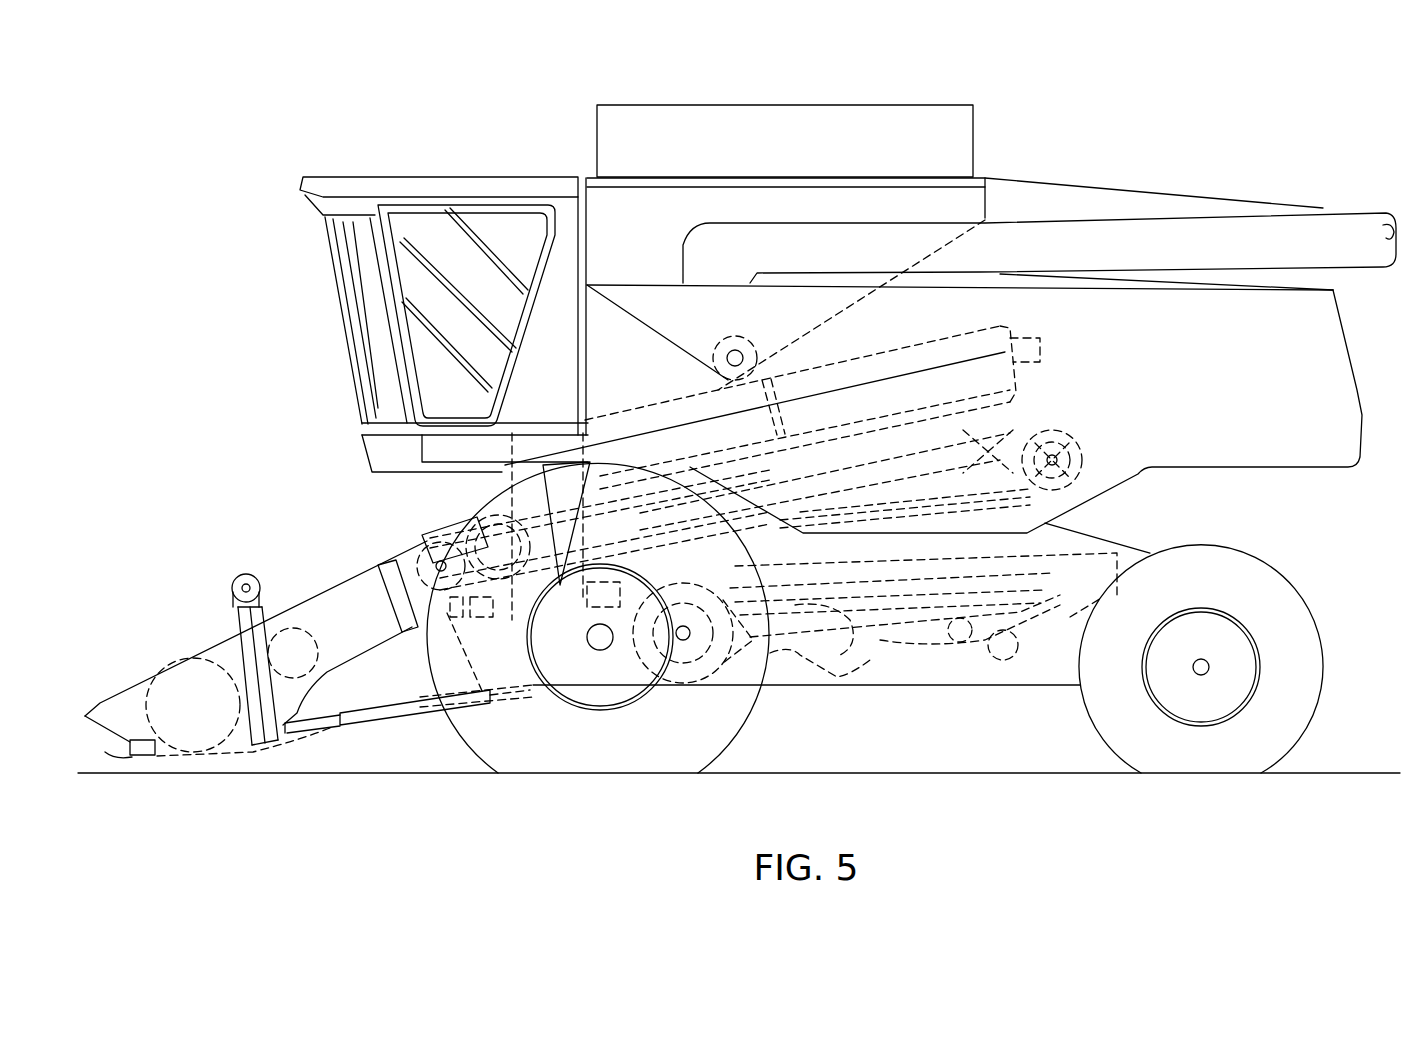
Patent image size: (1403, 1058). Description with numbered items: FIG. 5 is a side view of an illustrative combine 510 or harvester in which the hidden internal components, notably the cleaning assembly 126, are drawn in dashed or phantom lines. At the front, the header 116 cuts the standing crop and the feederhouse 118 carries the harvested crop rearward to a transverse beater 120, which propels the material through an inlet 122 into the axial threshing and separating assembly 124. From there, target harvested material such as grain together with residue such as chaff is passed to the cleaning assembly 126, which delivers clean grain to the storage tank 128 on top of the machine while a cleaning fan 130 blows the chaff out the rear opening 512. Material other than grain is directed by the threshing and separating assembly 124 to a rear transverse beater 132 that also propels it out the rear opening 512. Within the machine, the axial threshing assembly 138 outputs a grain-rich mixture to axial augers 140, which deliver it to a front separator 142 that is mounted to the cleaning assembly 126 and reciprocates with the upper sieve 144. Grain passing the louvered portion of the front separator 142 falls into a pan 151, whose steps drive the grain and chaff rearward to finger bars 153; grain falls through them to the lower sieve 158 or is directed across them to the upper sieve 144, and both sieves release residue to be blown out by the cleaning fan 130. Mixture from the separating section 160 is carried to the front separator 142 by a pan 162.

The combine 510 is at (1112, 130).
The rear opening 512 is at (1105, 457).
The header 116 is at (147, 672).
The feederhouse 118 is at (333, 582).
The transverse beater 120 is at (445, 522).
The inlet 122 is at (495, 497).
The axial threshing and separating assembly 124 is at (648, 395).
The cleaning assembly 126 is at (790, 655).
The storage tank 128 is at (753, 155).
The cleaning fan 130 is at (690, 667).
The transverse beater 132 is at (1085, 433).
The axial threshing assembly 138 is at (633, 427).
The axial augers 140 is at (672, 527).
The front separator 142 is at (812, 563).
The upper sieve 144 is at (955, 590).
The pan 151 is at (870, 588).
The finger bars 153 is at (775, 652).
The lower sieve 158 is at (950, 650).
The separating section 160 is at (872, 378).
The pan 162 is at (905, 500).